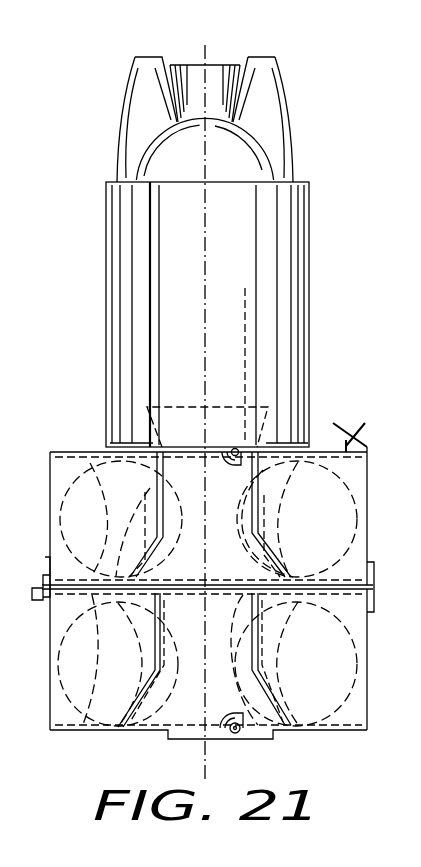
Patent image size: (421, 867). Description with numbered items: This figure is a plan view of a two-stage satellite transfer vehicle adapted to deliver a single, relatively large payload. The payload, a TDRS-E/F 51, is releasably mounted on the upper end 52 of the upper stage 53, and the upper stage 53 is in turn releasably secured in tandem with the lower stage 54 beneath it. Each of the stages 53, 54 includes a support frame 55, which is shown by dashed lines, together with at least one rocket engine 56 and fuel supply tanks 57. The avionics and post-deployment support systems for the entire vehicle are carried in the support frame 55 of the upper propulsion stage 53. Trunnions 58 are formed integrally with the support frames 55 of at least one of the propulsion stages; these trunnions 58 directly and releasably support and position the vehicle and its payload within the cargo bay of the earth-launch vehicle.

The TDRS-E/F payload 51 is at (310, 312).
The upper end 52 is at (82, 452).
The upper stage 53 is at (367, 490).
The lower stage 54 is at (367, 658).
The support frame 55 is at (141, 488).
The rocket engine 56 is at (157, 437).
The fuel supply tanks 57 is at (352, 548).
The trunnions 58 is at (236, 447).